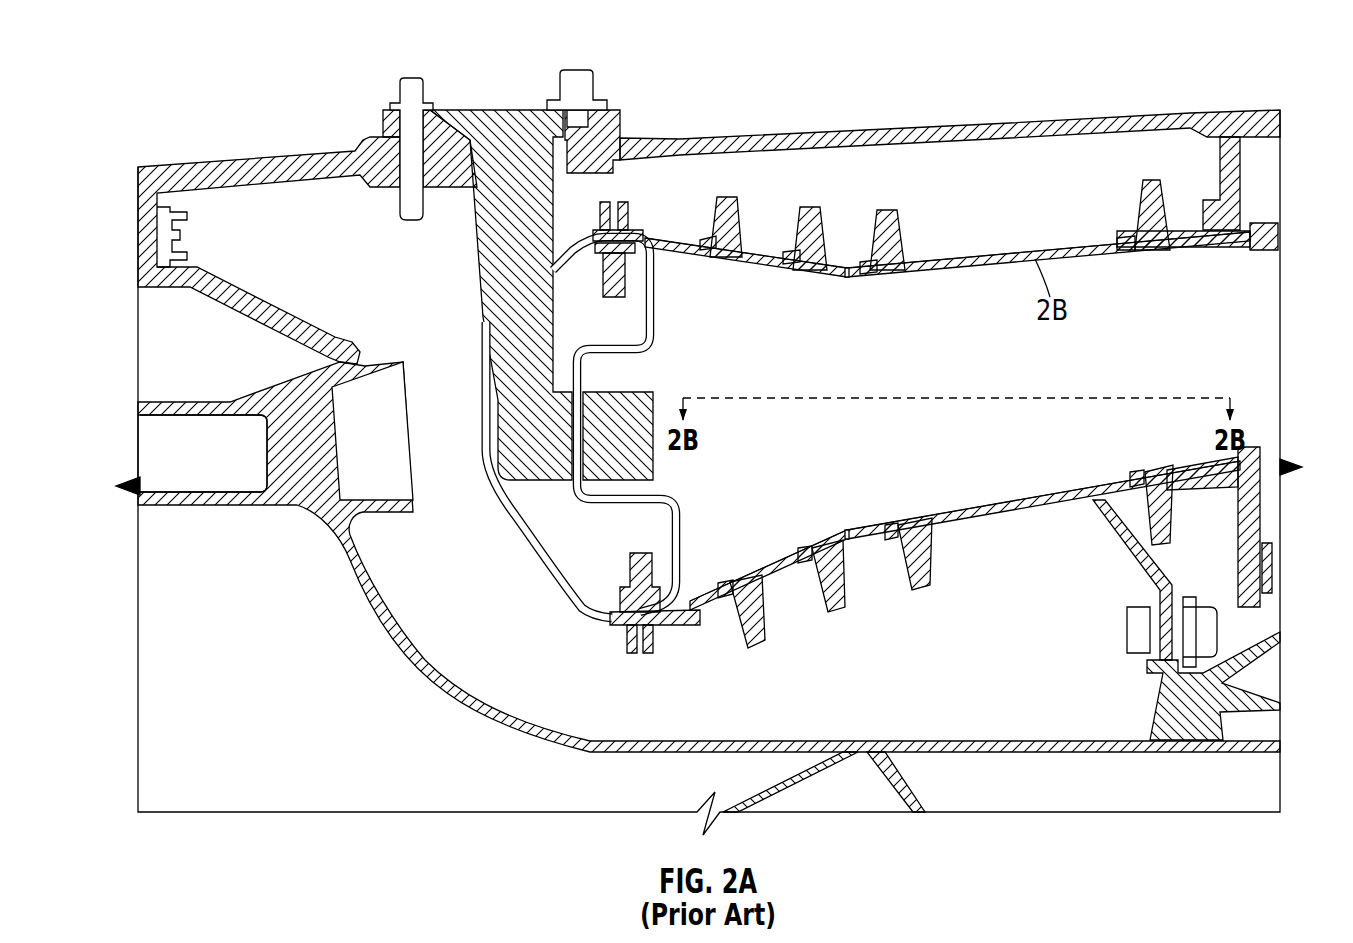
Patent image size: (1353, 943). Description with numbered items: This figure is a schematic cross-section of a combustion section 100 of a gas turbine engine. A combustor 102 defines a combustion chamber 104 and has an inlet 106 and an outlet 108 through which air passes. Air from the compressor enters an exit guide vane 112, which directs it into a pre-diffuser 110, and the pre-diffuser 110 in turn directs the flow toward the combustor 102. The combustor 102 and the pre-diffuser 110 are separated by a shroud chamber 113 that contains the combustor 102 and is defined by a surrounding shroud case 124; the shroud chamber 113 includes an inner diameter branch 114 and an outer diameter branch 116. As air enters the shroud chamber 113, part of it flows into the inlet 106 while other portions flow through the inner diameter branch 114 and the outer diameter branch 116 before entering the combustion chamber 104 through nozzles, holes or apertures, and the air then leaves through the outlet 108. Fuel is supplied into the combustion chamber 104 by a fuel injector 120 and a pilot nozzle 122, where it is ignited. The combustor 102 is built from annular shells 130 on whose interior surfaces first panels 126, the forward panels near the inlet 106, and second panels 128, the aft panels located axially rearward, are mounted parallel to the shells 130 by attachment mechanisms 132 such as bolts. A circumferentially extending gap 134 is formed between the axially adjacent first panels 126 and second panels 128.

The combustion section 100 is at (232, 46).
The combustor 102 is at (1059, 229).
The combustion chamber 104 is at (840, 447).
The inlet 106 is at (480, 363).
The outlet 108 is at (1262, 312).
The pre-diffuser 110 is at (316, 500).
The exit guide vane 112 is at (191, 421).
The shroud chamber 113 is at (430, 577).
The inner diameter branch 114 is at (690, 690).
The outer diameter branch 116 is at (660, 205).
The fuel injector 120 is at (496, 126).
The pilot nozzle 122 is at (653, 398).
The shroud case 124 is at (870, 126).
The first panels 126 is at (731, 263).
The second panels 128 is at (957, 271).
The shells 130 is at (771, 243).
The attachment mechanism 132 is at (815, 212).
The gap 134 is at (849, 281).